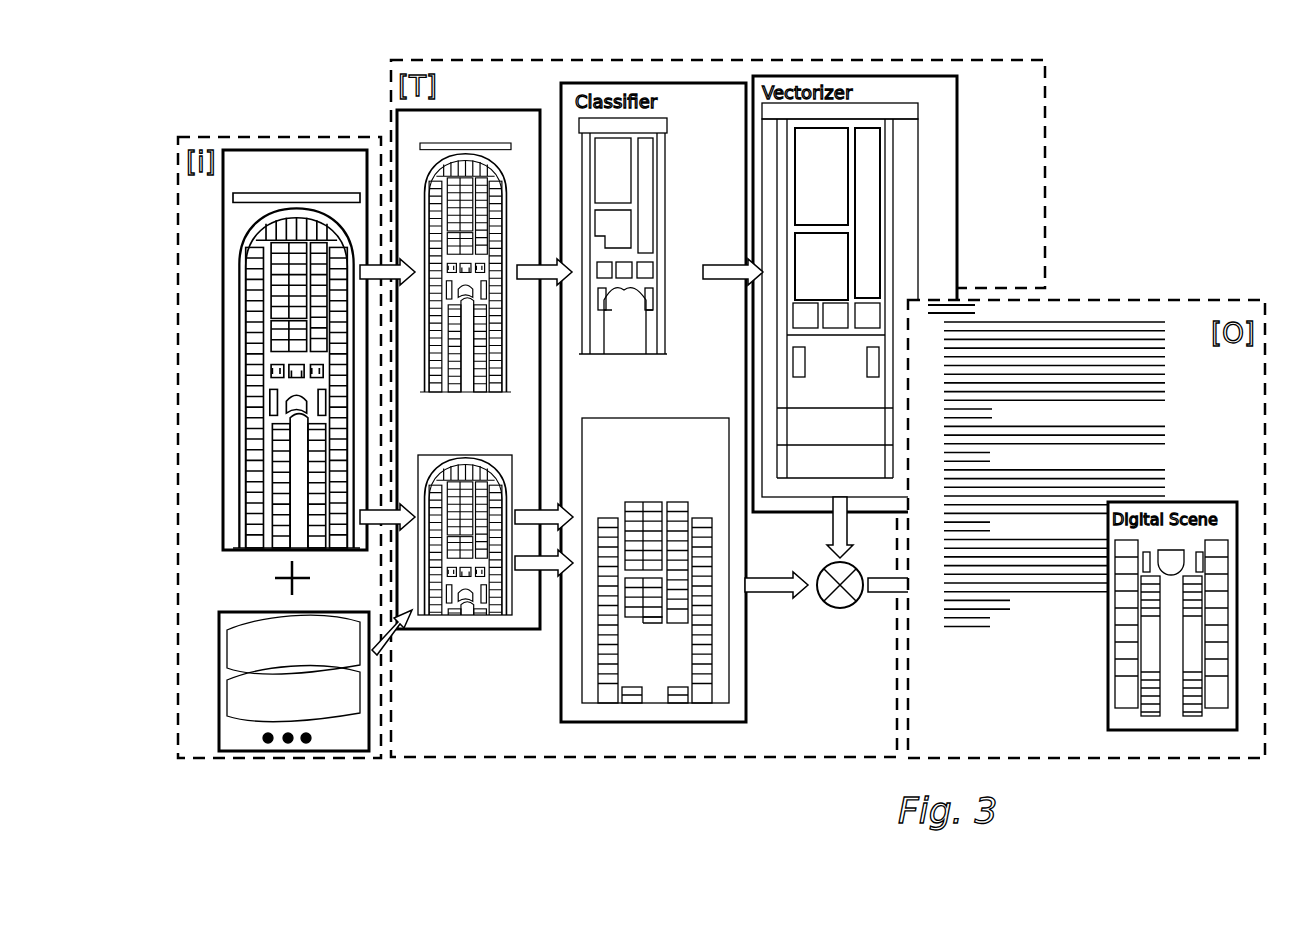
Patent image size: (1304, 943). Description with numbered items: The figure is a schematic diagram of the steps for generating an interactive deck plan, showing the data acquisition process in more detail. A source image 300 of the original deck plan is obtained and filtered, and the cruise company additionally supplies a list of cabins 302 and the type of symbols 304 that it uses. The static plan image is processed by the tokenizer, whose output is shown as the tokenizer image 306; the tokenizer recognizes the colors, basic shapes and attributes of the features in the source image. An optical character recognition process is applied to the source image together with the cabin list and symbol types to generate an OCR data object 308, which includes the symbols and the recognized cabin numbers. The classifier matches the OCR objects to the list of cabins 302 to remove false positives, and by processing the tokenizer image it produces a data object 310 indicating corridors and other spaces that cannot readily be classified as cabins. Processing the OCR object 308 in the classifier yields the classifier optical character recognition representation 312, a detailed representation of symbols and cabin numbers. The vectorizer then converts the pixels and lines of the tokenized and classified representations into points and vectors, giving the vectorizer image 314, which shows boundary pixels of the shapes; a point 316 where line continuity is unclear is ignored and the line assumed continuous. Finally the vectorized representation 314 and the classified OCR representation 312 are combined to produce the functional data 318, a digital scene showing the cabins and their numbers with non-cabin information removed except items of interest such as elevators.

The source image 300 is at (277, 150).
The list of cabins 302 is at (243, 633).
The type of symbols 304 is at (250, 720).
The tokenizer image 306 is at (468, 358).
The optical character recognition data object 308 is at (455, 613).
The classifier data object 310 is at (666, 185).
The classifier optical character recognition data representation 312 is at (688, 417).
The vectorizer image 314 is at (868, 208).
The point 316 is at (885, 153).
The functional data 318 is at (1123, 698).